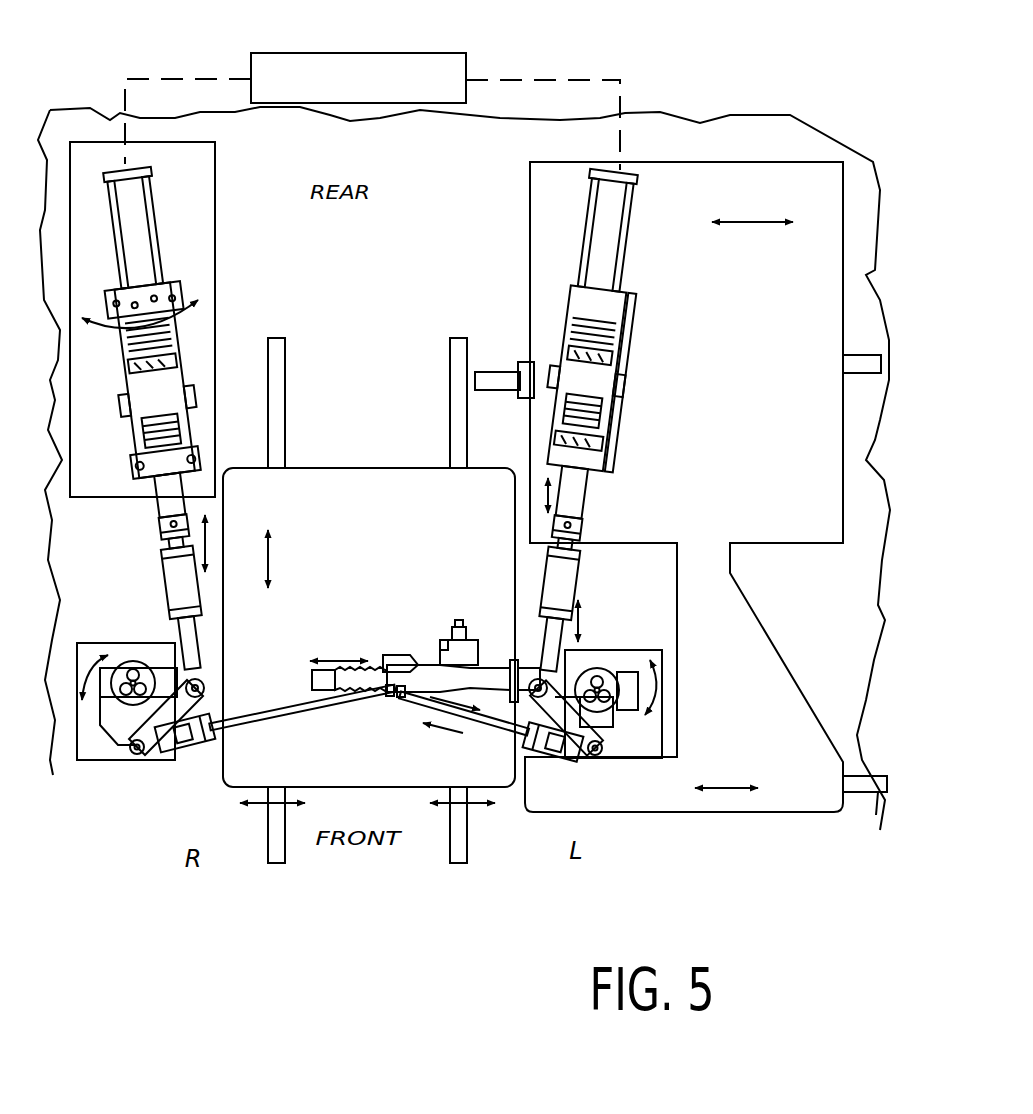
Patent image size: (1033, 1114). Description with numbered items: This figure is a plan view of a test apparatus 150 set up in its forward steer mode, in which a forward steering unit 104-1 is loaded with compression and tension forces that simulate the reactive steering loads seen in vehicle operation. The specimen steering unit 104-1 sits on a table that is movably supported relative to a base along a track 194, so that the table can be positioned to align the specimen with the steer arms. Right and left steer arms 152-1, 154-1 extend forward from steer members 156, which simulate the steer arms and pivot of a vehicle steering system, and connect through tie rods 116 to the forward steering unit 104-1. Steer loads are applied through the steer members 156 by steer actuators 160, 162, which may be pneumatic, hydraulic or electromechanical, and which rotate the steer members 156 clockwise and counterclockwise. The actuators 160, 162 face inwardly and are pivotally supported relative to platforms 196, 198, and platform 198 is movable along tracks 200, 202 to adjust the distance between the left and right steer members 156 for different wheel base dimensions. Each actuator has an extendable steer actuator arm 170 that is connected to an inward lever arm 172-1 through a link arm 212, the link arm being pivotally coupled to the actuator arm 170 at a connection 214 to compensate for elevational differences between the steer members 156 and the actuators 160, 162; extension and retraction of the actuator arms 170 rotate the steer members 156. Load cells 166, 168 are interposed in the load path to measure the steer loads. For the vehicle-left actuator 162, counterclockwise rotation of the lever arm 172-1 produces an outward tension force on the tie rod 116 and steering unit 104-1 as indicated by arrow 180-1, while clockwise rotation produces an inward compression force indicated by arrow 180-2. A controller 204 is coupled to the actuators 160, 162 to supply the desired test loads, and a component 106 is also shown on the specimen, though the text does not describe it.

The forward steering unit 104-1 is at (340, 662).
The sensor 106 is at (477, 620).
The tie rods 116 is at (318, 707).
The test apparatus 150 is at (398, 300).
The right steer arm 152-1 is at (105, 727).
The left steer arm 154-1 is at (622, 736).
The steer members 156 is at (137, 662).
The right steer actuator 160 is at (152, 211).
The left steer actuator 162 is at (640, 318).
The load cell 166 is at (182, 752).
The load cell 168 is at (562, 760).
The steer actuator arms 170 is at (175, 500).
The inward lever arms 172-1 is at (180, 711).
The tension force arrow 180-1 is at (445, 694).
The compression force arrow 180-2 is at (450, 735).
The track 194 is at (278, 338).
The platform 196 is at (209, 211).
The platform 198 is at (762, 367).
The track 200 is at (858, 355).
The track 202 is at (853, 776).
The controller 204 is at (433, 53).
The link arms 212 is at (168, 586).
The connection 214 is at (158, 544).